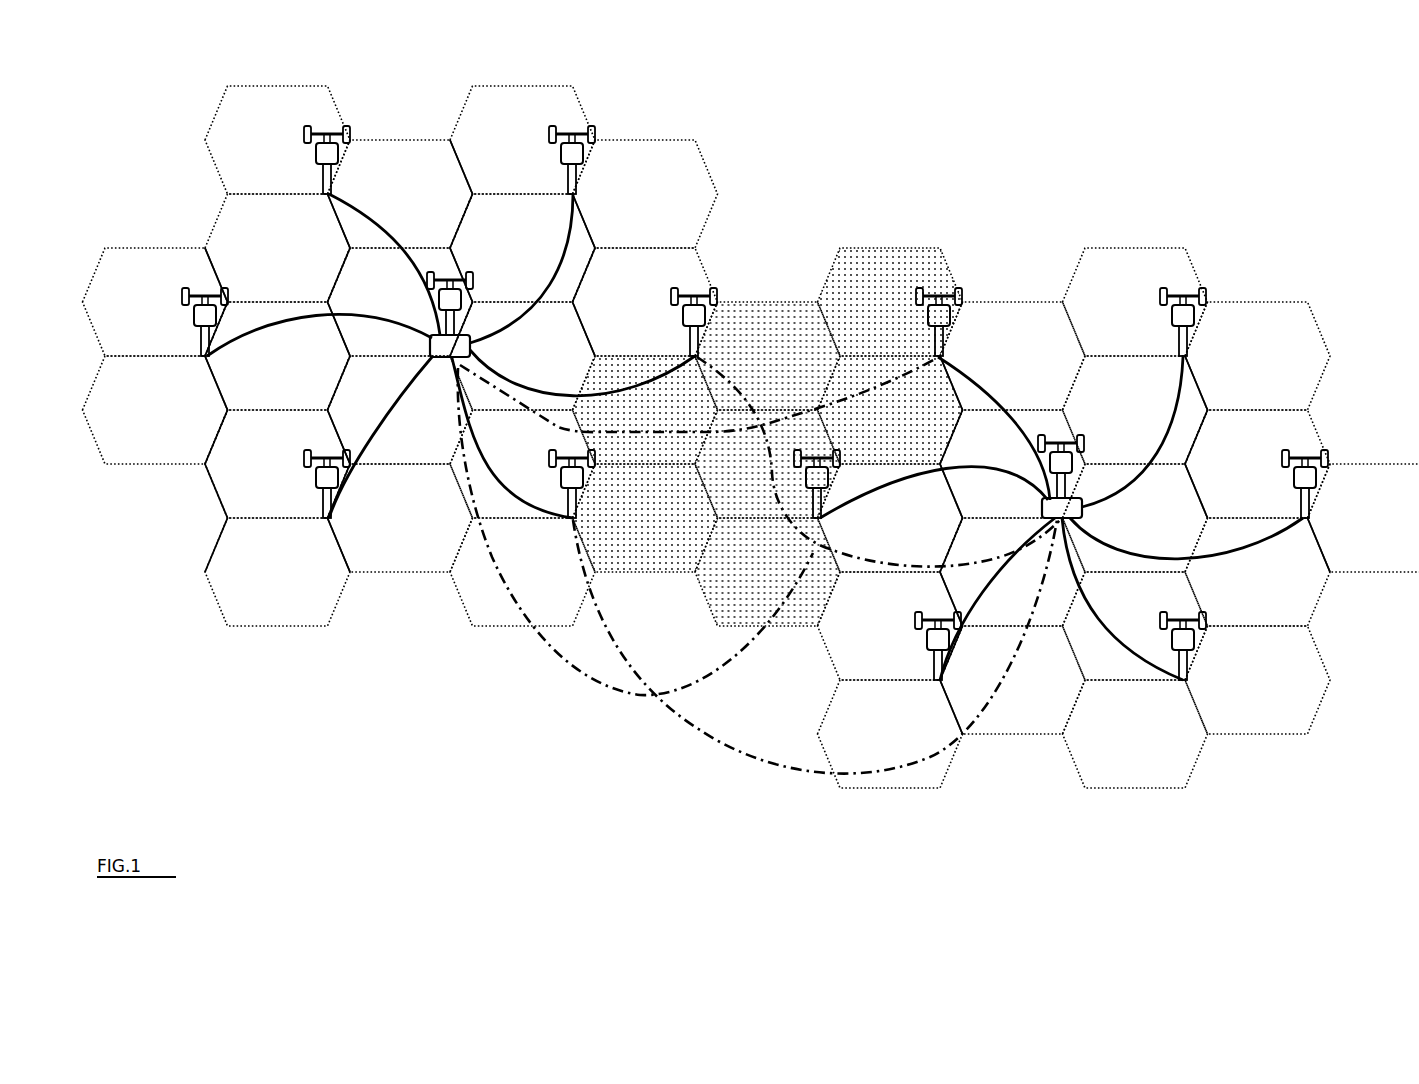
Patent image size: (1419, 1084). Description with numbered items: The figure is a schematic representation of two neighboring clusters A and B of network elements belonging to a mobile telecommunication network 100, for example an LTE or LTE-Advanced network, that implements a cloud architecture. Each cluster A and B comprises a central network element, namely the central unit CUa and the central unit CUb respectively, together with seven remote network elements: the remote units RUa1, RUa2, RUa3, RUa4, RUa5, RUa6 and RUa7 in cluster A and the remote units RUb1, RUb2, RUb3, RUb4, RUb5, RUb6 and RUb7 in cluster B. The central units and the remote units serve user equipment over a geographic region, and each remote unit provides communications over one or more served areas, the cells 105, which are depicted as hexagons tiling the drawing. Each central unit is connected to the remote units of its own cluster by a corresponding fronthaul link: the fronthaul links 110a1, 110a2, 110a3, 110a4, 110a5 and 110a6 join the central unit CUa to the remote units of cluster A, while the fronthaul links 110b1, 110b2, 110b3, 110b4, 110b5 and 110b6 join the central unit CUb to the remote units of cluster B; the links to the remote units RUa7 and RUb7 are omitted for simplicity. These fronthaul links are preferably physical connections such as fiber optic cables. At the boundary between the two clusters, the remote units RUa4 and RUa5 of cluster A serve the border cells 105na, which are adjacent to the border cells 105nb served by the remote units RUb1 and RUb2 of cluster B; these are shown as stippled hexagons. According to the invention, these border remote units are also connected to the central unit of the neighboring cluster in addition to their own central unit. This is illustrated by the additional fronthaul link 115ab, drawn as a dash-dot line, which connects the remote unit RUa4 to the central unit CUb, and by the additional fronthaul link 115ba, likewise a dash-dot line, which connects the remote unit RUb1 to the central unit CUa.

The mobile telecommunication network 100 is at (1199, 150).
The cell 105 is at (293, 192).
The border cell of cluster A 105na is at (775, 330).
The border cell of cluster B 105nb is at (922, 351).
The fronthaul link 110a1 is at (290, 320).
The fronthaul link 110a2 is at (358, 215).
The fronthaul link 110a3 is at (548, 290).
The fronthaul link 110a4 is at (588, 392).
The fronthaul link 110a5 is at (468, 460).
The fronthaul link 110a6 is at (398, 388).
The fronthaul link 110b1 is at (900, 483).
The fronthaul link 110b2 is at (965, 380).
The fronthaul link 110b3 is at (1158, 443).
The fronthaul link 110b4 is at (1200, 555).
The fronthaul link 110b5 is at (1066, 628).
The fronthaul link 110b6 is at (990, 575).
The additional fronthaul link 115ab is at (738, 754).
The additional fronthaul link 115ba is at (833, 403).
The central unit CUa is at (432, 338).
The central unit CUb is at (1081, 508).
The remote unit RUa1 is at (183, 292).
The remote unit RUa2 is at (311, 128).
The remote unit RUa3 is at (551, 128).
The border remote unit RUa4 is at (712, 290).
The border remote unit RUa5 is at (574, 521).
The remote unit RUa6 is at (329, 521).
The remote unit RUa7 is at (447, 275).
The border remote unit RUb1 is at (836, 462).
The border remote unit RUb2 is at (925, 290).
The remote unit RUb3 is at (1165, 290).
The remote unit RUb4 is at (1326, 460).
The remote unit RUb5 is at (1183, 683).
The remote unit RUb6 is at (940, 683).
The remote unit RUb7 is at (1054, 435).
The cluster A is at (633, 91).
The cluster B is at (1243, 272).